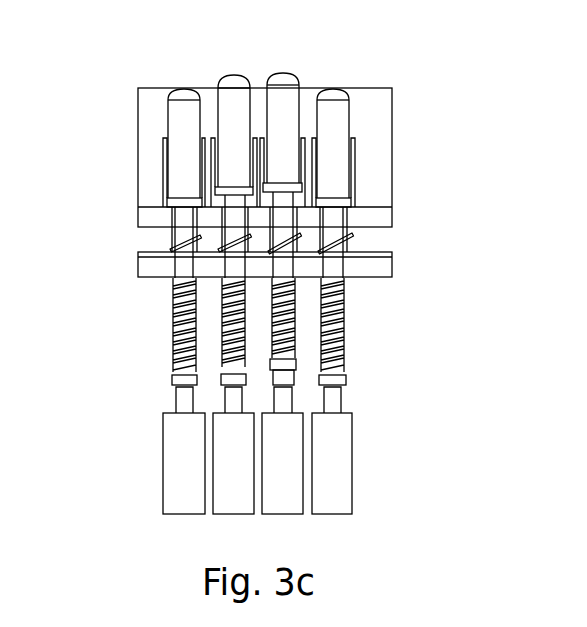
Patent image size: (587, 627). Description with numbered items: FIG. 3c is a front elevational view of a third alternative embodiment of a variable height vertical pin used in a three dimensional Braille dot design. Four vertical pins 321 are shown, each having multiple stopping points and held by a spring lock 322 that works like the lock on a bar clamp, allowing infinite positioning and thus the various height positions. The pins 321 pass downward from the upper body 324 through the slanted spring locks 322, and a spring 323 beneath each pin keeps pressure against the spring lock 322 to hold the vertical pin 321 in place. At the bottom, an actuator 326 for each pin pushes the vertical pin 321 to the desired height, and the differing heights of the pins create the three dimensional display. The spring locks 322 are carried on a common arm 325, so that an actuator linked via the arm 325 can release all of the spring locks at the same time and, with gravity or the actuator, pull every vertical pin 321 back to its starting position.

The vertical pin 321 is at (226, 74).
The spring lock 322 is at (179, 245).
The spring 323 is at (172, 335).
The housing 324 is at (394, 158).
The arm 325 is at (394, 266).
The actuator 326 is at (162, 470).